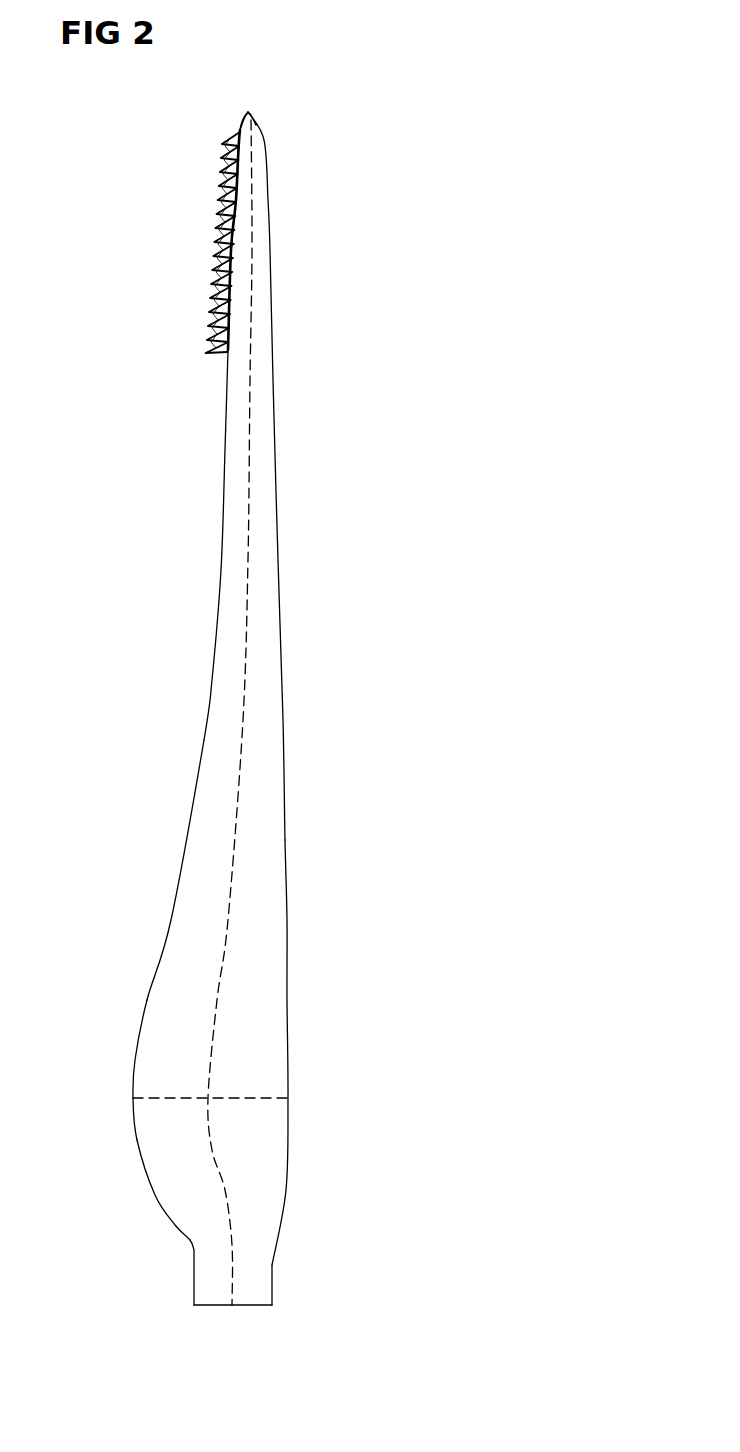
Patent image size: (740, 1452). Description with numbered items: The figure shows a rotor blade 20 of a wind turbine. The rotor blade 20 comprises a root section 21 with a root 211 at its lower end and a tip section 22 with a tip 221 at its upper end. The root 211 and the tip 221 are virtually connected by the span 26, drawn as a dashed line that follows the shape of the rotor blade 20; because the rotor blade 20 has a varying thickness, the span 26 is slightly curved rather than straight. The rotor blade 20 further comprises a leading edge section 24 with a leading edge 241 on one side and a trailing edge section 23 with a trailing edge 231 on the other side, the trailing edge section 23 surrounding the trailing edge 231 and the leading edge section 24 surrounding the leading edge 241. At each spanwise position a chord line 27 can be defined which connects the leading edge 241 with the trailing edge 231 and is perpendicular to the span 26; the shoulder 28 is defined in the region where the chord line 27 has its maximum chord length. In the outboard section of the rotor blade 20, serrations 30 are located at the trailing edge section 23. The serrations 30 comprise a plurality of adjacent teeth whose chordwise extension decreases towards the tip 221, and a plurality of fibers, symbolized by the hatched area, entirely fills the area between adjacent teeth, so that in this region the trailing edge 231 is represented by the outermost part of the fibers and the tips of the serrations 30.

The rotor blade 20 is at (247, 716).
The root section 21 is at (260, 1263).
The root 211 is at (220, 1310).
The tip section 22 is at (240, 128).
The tip 221 is at (248, 113).
The trailing edge section 23 is at (210, 780).
The trailing edge 231 is at (210, 243).
The leading edge section 24 is at (272, 818).
The leading edge 241 is at (287, 868).
The span 26 is at (243, 755).
The chord line 27 is at (252, 1095).
The shoulder 28 is at (133, 1098).
The serrations 30 is at (176, 279).